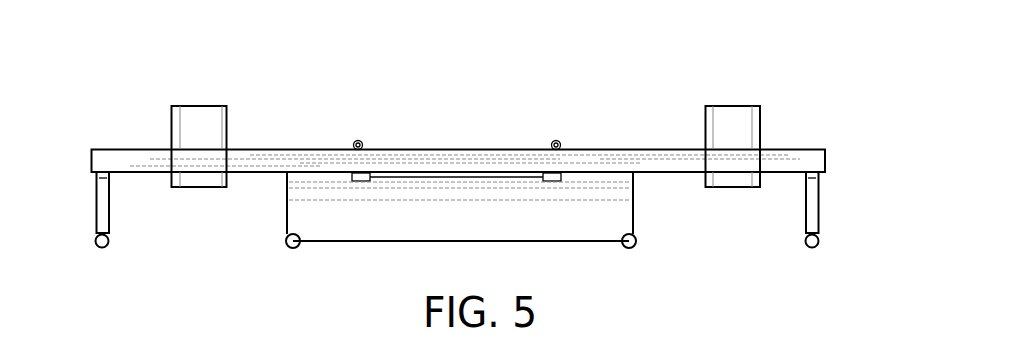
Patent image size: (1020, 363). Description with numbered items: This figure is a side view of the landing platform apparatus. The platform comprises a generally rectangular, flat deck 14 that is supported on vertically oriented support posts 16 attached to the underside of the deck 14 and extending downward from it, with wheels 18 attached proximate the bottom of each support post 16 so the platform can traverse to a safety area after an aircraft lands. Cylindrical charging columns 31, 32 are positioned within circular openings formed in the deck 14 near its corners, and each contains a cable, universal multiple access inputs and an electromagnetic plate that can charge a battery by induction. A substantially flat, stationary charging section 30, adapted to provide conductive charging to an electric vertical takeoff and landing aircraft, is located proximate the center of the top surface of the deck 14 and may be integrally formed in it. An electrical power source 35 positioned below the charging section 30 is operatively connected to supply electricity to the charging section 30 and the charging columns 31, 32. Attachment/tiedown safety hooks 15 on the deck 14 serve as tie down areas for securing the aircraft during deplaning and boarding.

The deck 14 is at (608, 162).
The safety hooks 15 is at (354, 141).
The support posts 16 is at (101, 212).
The wheels 18 is at (104, 242).
The charging section 30 is at (423, 180).
The charging column 31 is at (733, 117).
The charging column 32 is at (200, 107).
The electrical power source 35 is at (477, 213).